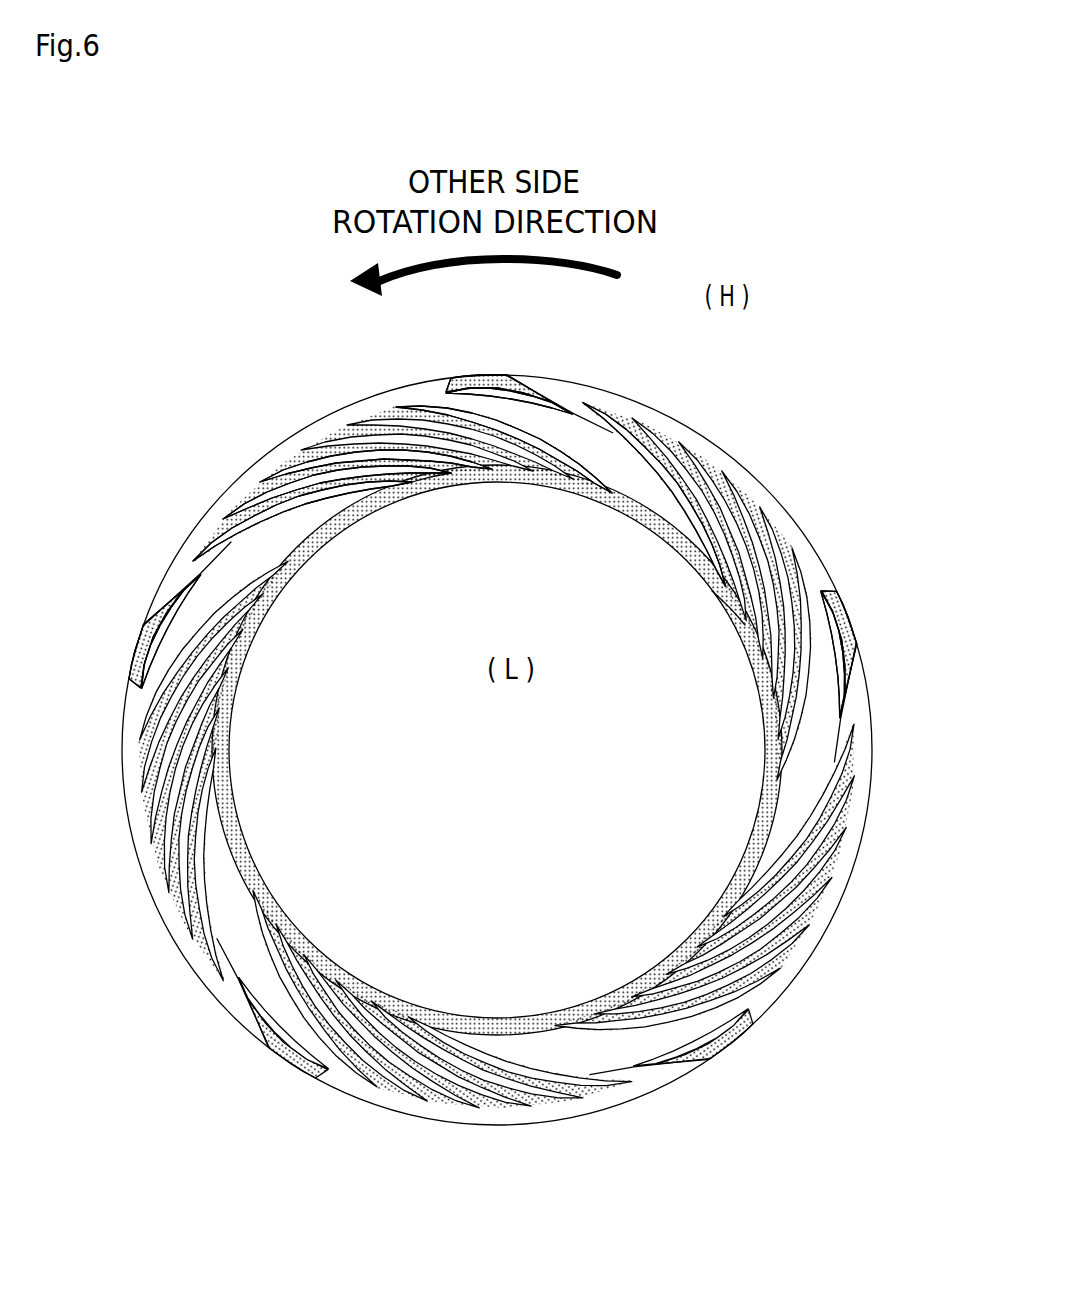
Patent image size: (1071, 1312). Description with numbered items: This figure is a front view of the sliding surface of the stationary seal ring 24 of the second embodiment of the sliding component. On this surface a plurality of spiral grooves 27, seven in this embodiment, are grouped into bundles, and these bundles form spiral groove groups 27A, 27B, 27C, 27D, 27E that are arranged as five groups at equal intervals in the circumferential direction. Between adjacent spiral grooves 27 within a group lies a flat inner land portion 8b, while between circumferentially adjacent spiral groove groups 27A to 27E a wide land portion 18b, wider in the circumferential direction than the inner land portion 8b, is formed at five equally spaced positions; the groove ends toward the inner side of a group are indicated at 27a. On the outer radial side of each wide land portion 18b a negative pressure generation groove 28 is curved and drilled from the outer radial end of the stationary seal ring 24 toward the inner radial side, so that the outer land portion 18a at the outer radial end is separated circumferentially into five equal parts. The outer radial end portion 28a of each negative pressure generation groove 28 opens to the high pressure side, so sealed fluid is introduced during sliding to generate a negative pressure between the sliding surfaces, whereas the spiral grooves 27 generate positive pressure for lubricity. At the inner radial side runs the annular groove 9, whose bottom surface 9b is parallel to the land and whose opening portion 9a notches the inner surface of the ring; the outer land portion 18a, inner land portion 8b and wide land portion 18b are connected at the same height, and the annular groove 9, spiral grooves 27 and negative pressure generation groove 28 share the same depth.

The stationary seal ring 24 is at (709, 395).
The spiral groove 27 is at (413, 392).
The spiral groove group 27A is at (296, 409).
The spiral groove group 27B is at (114, 827).
The spiral groove group 27C is at (410, 1128).
The spiral groove group 27D is at (814, 983).
The spiral groove group 27E is at (786, 492).
The downstream end of groove group 27a is at (435, 482).
The negative pressure generation groove 28 is at (485, 373).
The outer radial end portion 28a is at (478, 373).
The outer land portion 18a is at (231, 494).
The wide land portion 18b is at (640, 462).
The inner land portion 8b is at (292, 452).
The annular groove 9 is at (548, 494).
The opening portion 9a is at (702, 598).
The bottom surface 9b is at (736, 652).